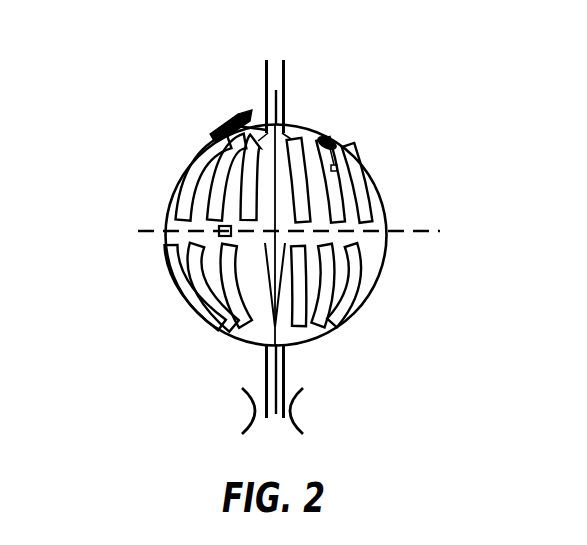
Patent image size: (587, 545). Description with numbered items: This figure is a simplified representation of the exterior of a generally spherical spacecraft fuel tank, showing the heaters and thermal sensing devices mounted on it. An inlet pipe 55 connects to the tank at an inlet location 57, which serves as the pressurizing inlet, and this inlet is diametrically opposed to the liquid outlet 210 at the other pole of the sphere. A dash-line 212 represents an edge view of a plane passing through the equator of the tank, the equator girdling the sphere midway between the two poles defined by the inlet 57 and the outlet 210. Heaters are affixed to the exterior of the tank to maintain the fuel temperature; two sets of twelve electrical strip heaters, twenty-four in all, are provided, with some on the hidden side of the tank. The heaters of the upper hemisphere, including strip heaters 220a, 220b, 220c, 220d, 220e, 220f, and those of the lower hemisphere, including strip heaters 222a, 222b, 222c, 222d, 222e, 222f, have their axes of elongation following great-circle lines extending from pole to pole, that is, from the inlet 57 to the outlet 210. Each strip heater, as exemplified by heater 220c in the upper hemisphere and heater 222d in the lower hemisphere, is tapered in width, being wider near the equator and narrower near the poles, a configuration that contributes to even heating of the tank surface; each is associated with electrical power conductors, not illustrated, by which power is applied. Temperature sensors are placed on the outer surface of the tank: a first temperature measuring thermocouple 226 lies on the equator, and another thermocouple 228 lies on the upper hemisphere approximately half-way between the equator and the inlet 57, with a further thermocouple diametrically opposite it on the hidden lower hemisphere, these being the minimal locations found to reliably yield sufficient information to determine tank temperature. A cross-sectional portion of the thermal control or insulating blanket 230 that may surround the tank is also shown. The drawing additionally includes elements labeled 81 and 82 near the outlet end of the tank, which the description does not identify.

The inlet pipe 55 is at (265, 73).
The inlet location 57 is at (283, 120).
The inner tube 81 is at (284, 366).
The outer sheath 82 is at (242, 402).
The liquid outlet 210 is at (262, 352).
The dash-line 212 is at (133, 231).
The strip heater 220a is at (186, 197).
The strip heater 220b is at (209, 172).
The strip heater 220c is at (224, 141).
The strip heater 220d is at (289, 138).
The strip heater 220e is at (334, 176).
The strip heater 220f is at (372, 208).
The strip heater 222a is at (168, 259).
The strip heater 222b is at (194, 290).
The strip heater 222c is at (232, 321).
The strip heater 222d is at (284, 261).
The strip heater 222e is at (313, 288).
The strip heater 222f is at (338, 305).
The thermocouple 226 is at (219, 229).
The thermocouple 228 is at (338, 150).
The thermal control blanket 230 is at (227, 109).